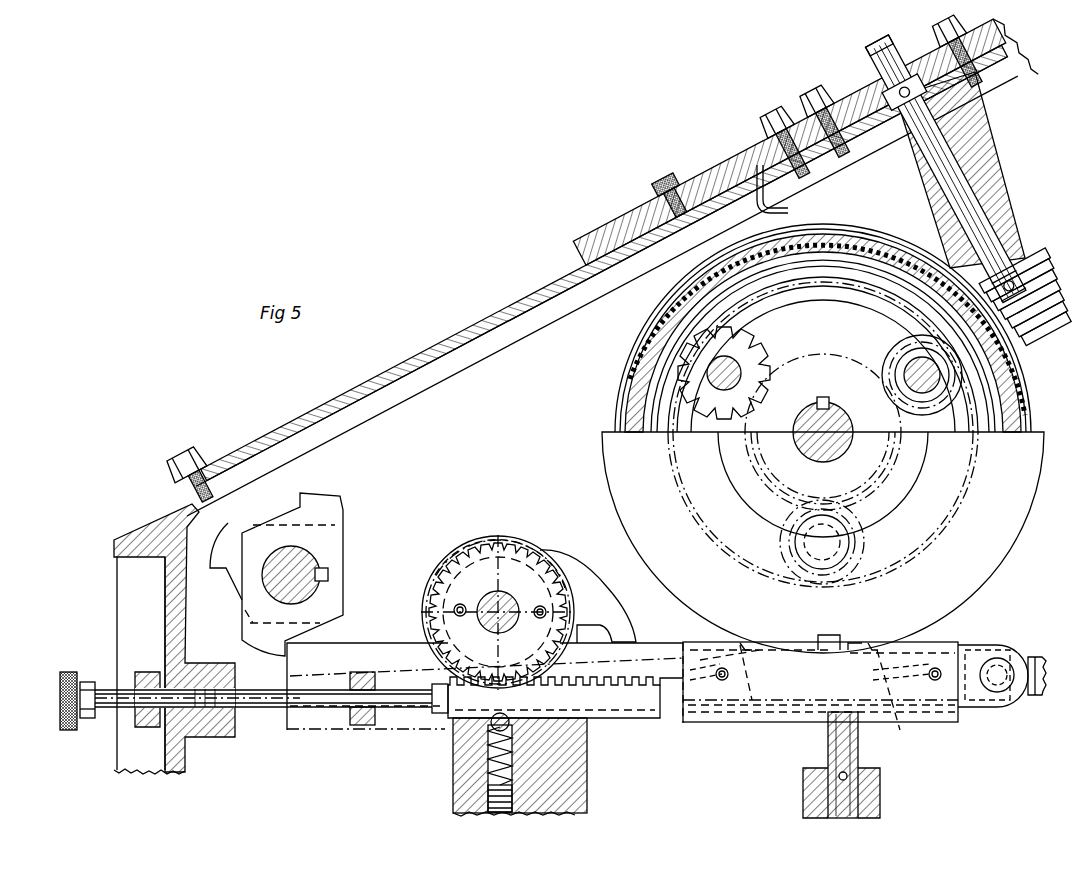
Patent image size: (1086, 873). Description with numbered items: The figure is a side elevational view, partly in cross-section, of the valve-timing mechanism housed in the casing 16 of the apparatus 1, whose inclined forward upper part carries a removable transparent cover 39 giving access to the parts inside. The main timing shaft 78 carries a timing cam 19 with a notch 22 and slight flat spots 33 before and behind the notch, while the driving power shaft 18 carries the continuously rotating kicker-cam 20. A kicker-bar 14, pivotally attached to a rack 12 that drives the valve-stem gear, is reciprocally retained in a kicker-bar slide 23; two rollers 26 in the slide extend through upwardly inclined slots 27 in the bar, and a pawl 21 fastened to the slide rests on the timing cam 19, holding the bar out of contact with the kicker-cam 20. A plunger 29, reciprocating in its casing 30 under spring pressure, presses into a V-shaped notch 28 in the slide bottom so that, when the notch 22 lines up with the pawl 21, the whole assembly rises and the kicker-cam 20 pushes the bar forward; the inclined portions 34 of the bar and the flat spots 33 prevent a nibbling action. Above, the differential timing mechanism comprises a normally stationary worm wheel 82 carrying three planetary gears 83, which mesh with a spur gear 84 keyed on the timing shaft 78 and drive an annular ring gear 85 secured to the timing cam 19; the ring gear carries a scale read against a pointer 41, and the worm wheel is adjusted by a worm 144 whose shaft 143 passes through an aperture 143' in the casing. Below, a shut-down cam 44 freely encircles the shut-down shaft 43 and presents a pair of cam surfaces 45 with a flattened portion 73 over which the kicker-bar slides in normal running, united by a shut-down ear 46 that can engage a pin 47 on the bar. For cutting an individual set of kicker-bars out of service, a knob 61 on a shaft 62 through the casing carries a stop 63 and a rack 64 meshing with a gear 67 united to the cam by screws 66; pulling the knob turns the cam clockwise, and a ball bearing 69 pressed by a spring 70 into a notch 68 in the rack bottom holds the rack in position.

The frame 1 is at (148, 532).
The rack 12 is at (1038, 657).
The kicker-bar 14 is at (975, 645).
The casing 16 is at (178, 596).
The driving power shaft 18 is at (312, 560).
The timing cam 19 is at (985, 567).
The kicker-cam 20 is at (300, 503).
The pawl 21 is at (820, 636).
The notch 22 is at (855, 642).
The kicker-bar slide 23 is at (726, 650).
The roller 26 is at (722, 681).
The inclined slot 27 is at (677, 690).
The V-shaped notch 28 is at (820, 695).
The plunger 29 is at (830, 756).
The casing 30 is at (871, 793).
The flat spot 33 is at (757, 642).
The inclined portion 34 is at (810, 678).
The transparent cover 39 is at (416, 352).
The pointer 41 is at (790, 213).
The shut-down shaft 43 is at (495, 598).
The shut-down cam 44 is at (506, 562).
The cam surface 45 is at (560, 552).
The shut-down ear 46 is at (600, 594).
The pin 47 is at (590, 748).
The knob 61 is at (68, 672).
The shaft 62 is at (262, 710).
The stop 63 is at (362, 728).
The rack 64 is at (483, 695).
The screw 66 is at (452, 606).
The gear 67 is at (430, 618).
The notch 68 is at (665, 712).
The ball bearing 69 is at (510, 730).
The spring 70 is at (458, 800).
The flattened portion 73 is at (430, 656).
The main timing shaft 78 is at (838, 446).
The worm wheel 82 is at (655, 306).
The planetary gear 83 is at (908, 348).
The spur gear 84 is at (823, 398).
The annular ring gear 85 is at (662, 304).
The shaft 143 is at (932, 169).
The aperture 143' is at (800, 151).
The worm 144 is at (1075, 270).